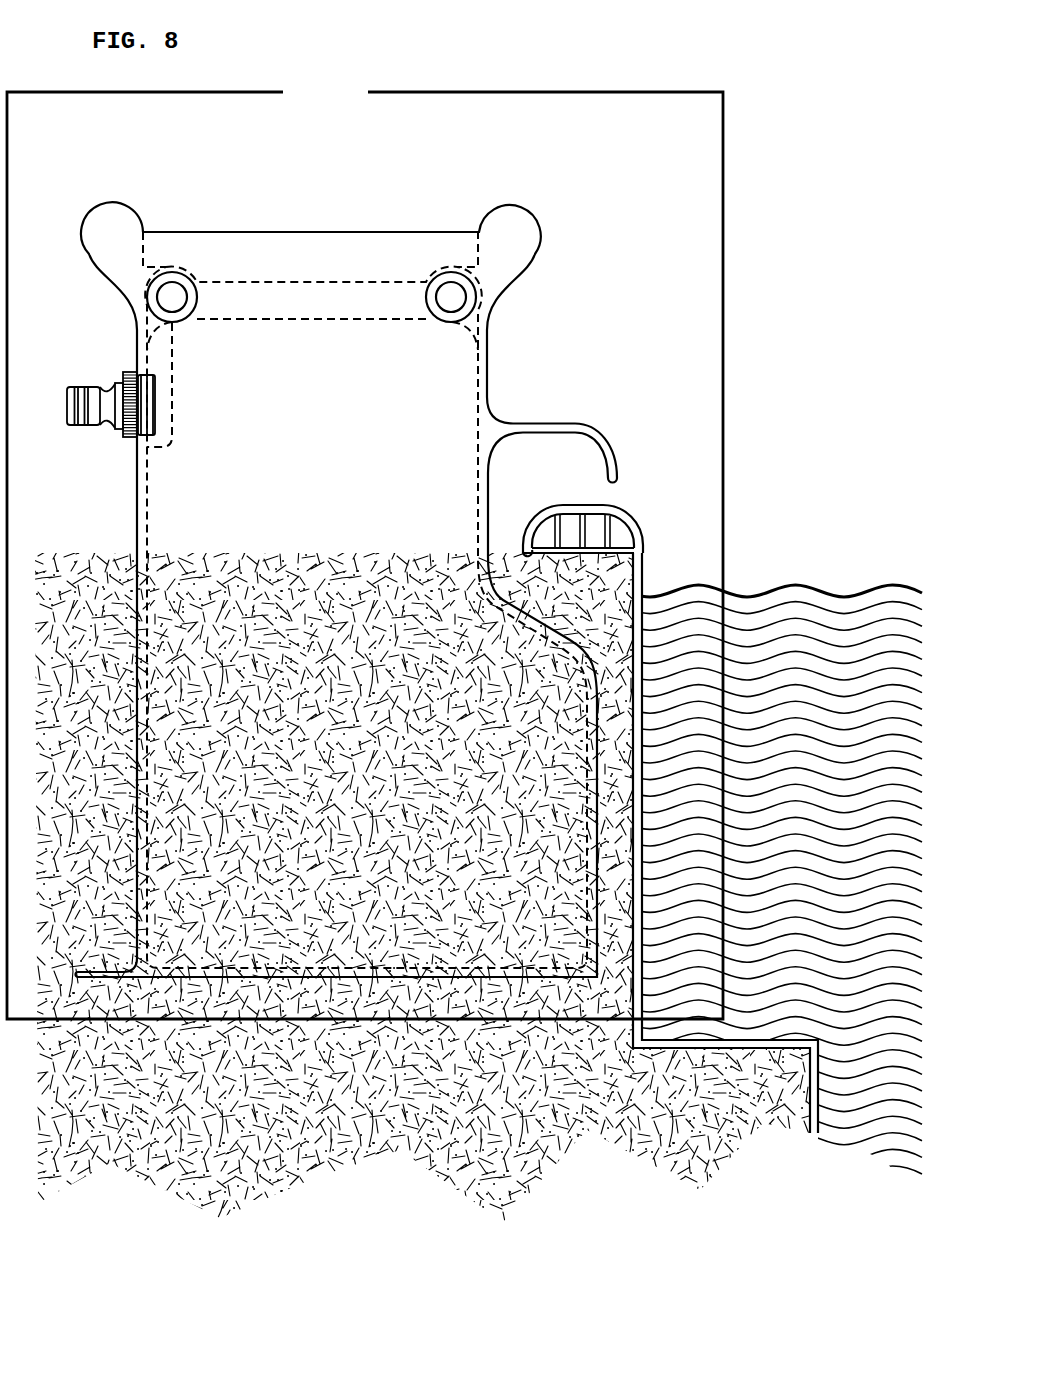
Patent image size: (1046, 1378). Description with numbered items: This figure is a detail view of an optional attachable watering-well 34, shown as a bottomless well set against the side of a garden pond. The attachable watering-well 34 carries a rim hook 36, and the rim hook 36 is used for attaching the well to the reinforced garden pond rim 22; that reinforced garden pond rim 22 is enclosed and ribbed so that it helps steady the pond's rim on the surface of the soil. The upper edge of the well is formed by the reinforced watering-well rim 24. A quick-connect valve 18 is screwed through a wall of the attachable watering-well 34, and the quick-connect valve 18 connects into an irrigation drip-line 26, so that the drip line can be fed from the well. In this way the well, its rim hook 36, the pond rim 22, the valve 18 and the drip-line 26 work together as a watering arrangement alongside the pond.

The quick-connect valve 18 is at (80, 375).
The reinforced garden pond rim 22 is at (631, 508).
The reinforced watering-well rim 24 is at (539, 211).
The irrigation drip-line 26 is at (226, 289).
The attachable watering-well 34 is at (365, 550).
The rim hook 36 is at (586, 410).